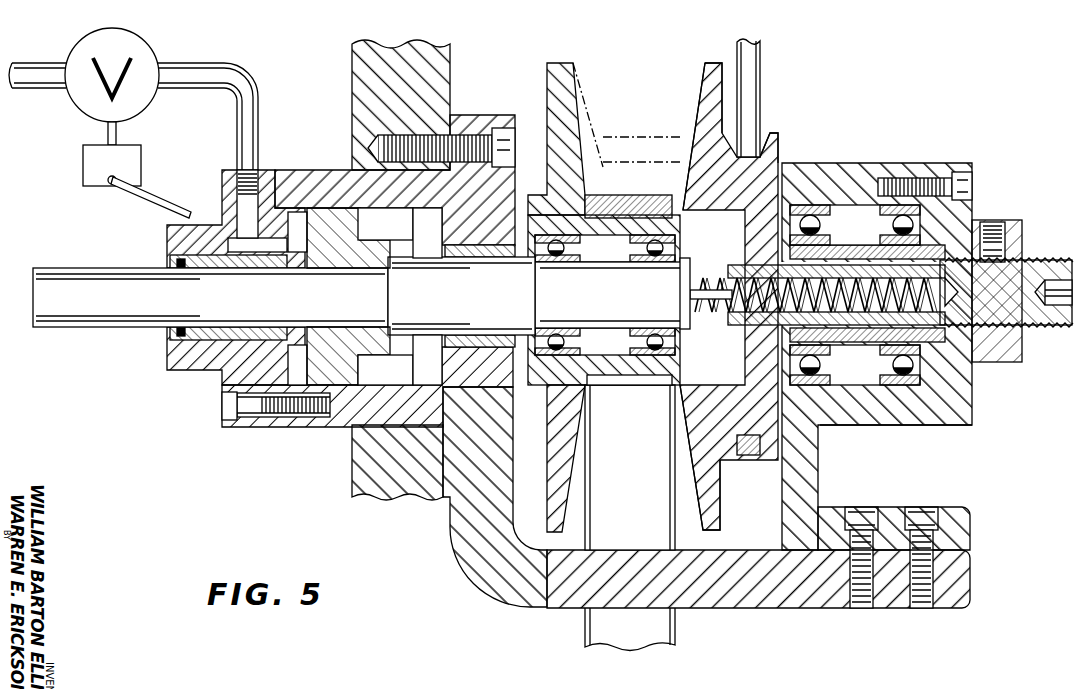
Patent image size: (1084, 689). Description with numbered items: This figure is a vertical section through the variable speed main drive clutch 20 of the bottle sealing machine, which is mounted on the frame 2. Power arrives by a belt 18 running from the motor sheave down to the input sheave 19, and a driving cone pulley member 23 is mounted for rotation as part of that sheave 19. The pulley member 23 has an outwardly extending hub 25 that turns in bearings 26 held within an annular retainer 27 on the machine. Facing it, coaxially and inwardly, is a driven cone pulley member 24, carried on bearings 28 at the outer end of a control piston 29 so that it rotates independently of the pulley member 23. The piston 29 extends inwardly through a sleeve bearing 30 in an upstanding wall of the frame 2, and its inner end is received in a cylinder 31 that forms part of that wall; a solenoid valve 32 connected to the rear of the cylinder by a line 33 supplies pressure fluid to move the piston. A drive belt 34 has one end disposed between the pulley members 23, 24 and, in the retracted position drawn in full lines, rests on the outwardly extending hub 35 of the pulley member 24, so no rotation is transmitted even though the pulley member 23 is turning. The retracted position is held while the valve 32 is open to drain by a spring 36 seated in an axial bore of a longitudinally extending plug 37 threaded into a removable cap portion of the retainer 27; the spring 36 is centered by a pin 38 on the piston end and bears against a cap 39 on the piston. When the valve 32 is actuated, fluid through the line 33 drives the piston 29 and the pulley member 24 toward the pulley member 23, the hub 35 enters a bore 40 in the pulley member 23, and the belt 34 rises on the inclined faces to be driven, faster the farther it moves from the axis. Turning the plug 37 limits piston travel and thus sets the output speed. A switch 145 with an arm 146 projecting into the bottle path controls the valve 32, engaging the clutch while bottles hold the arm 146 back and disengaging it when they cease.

The frame 2 is at (482, 117).
The belt 18 is at (757, 70).
The input sheave 19 is at (774, 135).
The main drive clutch 20 is at (1000, 205).
The driving cone pulley member 23 is at (712, 63).
The driven cone pulley member 24 is at (552, 63).
The hub 25 is at (858, 256).
The bearings 26 is at (884, 213).
The annular retainer 27 is at (912, 426).
The bearings 28 is at (652, 258).
The control piston 29 is at (410, 312).
The sleeve bearing 30 is at (486, 333).
The cylinder 31 is at (396, 213).
The solenoid valve 32 is at (158, 56).
The line 33 is at (262, 96).
The drive belt 34 is at (614, 196).
The hub 35 is at (620, 226).
The spring 36 is at (706, 314).
The plug 37 is at (1046, 327).
The pin 38 is at (708, 282).
The cap 39 is at (682, 297).
The bore 40 is at (716, 210).
The switch 145 is at (84, 164).
The arm 146 is at (160, 203).